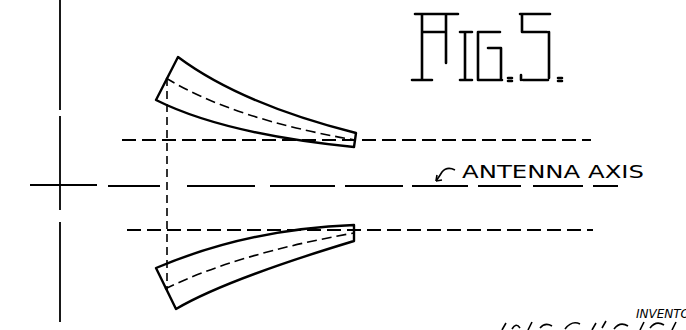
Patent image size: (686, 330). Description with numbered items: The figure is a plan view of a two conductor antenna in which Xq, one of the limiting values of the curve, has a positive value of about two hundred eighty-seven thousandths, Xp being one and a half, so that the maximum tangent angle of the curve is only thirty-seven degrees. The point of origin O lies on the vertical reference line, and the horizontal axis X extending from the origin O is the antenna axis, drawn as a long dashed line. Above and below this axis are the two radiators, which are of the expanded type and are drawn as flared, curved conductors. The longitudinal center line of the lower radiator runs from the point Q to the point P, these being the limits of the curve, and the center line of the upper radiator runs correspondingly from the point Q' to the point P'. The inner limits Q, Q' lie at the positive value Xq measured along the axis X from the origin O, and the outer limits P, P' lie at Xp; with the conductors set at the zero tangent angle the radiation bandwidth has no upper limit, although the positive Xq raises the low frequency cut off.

The point of origin O is at (324, 177).
The X axis X is at (169, 184).
The limit point of upper radiator center line P' is at (272, 104).
The limit point of upper radiator center line Q' is at (154, 68).
The limit of the curve P is at (267, 264).
The limit of the curve Q is at (151, 297).